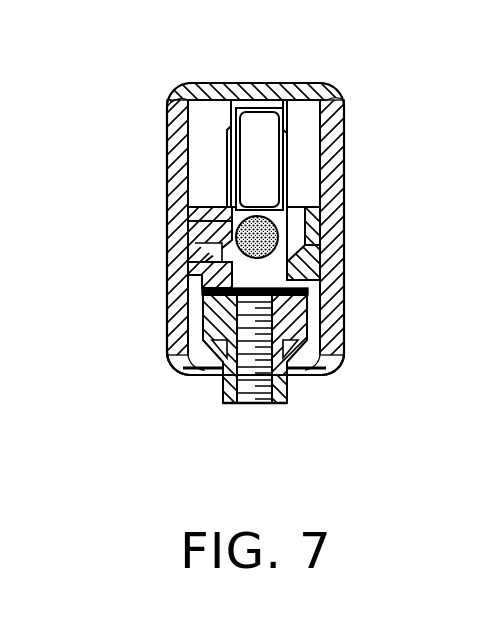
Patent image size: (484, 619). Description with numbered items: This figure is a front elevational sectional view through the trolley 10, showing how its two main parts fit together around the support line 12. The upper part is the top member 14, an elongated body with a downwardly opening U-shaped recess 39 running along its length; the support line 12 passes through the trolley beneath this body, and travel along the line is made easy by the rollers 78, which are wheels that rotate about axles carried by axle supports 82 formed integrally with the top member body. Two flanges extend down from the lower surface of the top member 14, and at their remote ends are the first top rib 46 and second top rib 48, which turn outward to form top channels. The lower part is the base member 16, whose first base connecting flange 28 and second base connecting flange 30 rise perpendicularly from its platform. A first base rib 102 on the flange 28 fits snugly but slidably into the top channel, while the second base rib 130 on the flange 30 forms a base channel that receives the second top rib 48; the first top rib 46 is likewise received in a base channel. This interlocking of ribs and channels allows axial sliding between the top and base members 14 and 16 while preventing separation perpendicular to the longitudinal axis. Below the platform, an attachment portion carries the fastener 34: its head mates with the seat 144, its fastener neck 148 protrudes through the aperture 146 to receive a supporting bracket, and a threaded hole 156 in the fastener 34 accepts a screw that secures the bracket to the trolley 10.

The trolley 10 is at (106, 74).
The support line 12 is at (200, 228).
The top member 14 is at (176, 93).
The base member 16 is at (156, 350).
The first base connecting flange 28 is at (344, 305).
The second base connecting flange 30 is at (167, 312).
The fastener 34 is at (212, 390).
The U-shaped recess 39 is at (240, 108).
The first top rib 46 is at (313, 268).
The second top rib 48 is at (205, 268).
The rollers 78 is at (265, 127).
The axle supports 82 is at (208, 140).
The first base rib 102 is at (330, 243).
The second base rib 130 is at (185, 245).
The seat 144 is at (185, 354).
The aperture 146 is at (300, 377).
The fastener neck 148 is at (287, 402).
The threaded hole 156 is at (256, 405).